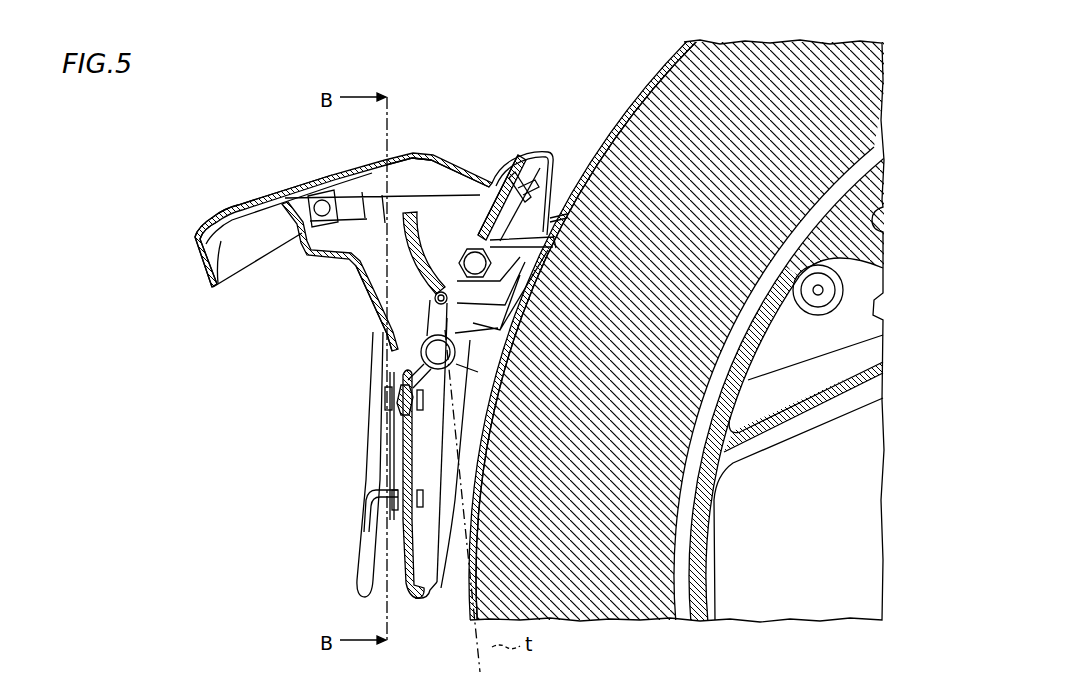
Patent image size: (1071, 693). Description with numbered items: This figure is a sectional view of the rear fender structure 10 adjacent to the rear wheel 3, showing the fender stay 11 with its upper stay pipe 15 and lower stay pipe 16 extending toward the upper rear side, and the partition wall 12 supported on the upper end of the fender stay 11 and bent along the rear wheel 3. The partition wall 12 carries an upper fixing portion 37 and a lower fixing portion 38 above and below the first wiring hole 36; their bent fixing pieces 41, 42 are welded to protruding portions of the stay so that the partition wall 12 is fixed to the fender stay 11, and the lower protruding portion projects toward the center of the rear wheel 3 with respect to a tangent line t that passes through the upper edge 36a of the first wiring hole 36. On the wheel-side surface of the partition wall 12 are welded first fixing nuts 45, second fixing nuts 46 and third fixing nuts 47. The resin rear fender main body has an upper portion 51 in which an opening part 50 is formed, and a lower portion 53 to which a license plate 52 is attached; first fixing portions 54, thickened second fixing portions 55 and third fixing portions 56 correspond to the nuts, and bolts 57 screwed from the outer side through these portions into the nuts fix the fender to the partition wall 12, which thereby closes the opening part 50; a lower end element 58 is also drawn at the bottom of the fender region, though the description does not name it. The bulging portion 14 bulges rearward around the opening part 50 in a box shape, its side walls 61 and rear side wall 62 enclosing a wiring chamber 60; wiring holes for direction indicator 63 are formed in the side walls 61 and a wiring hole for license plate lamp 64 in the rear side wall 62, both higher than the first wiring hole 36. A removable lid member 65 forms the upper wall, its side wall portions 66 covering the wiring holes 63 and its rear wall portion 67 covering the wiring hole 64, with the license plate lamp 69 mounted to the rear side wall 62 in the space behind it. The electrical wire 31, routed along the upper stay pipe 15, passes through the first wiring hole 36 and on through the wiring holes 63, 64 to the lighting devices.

The rear wheel 3 is at (650, 90).
The rear fender structure 10 is at (428, 137).
The fender stay 11 is at (679, 346).
The partition wall 12 is at (417, 513).
The bulging portion 14 is at (366, 293).
The upper stay pipe 15 is at (556, 232).
The lower stay pipe 16 is at (566, 210).
The electrical wire 31 is at (404, 240).
The first wiring hole 36 is at (380, 313).
The upper edge 36a is at (362, 272).
The upper fixing portion 37 is at (440, 290).
The lower fixing portion 38 is at (413, 348).
The fixing pieces 41 is at (468, 248).
The fixing pieces 42 is at (395, 347).
The first fixing nuts 45 is at (517, 250).
The second fixing nuts 46 is at (423, 398).
The third fixing nuts 47 is at (428, 570).
The opening part 50 is at (447, 230).
The upper portion 51 is at (486, 215).
The license plate 52 is at (363, 477).
The lower portion 53 is at (408, 583).
The first fixing portions 54 is at (520, 180).
The second fixing portions 55 is at (393, 413).
The third fixing portions 56 is at (377, 515).
The bolts 57 is at (497, 175).
The lower end 58 is at (423, 598).
The wiring chamber 60 is at (365, 228).
The side walls 61 is at (380, 220).
The rear side wall 62 is at (270, 193).
The wiring holes for direction indicator 63 is at (414, 210).
The wiring hole for license plate lamp 64 is at (295, 230).
The lid member 65 is at (228, 207).
The side wall portions 66 is at (222, 280).
The rear wall portion 67 is at (197, 262).
The license plate lamp 69 is at (251, 262).